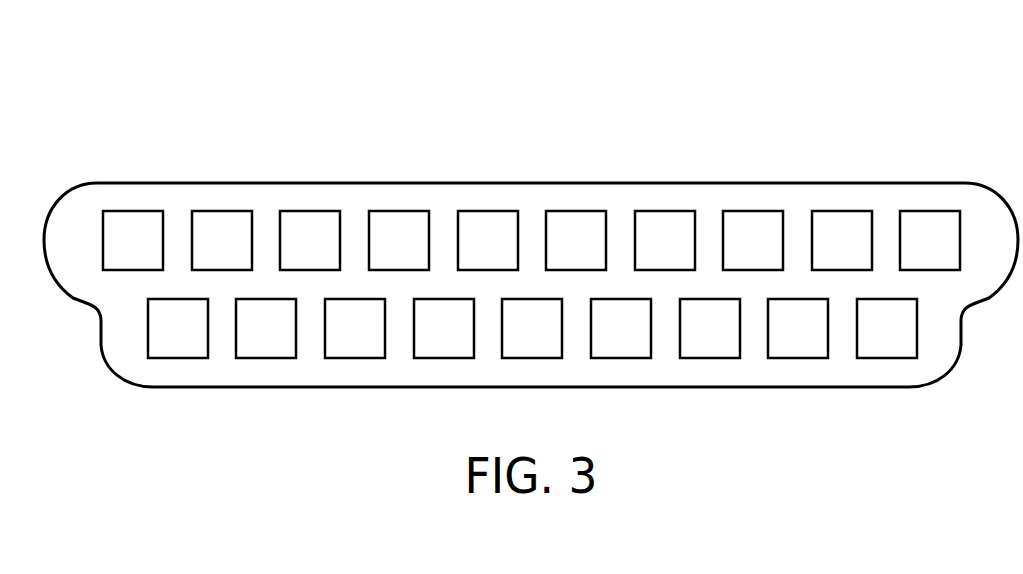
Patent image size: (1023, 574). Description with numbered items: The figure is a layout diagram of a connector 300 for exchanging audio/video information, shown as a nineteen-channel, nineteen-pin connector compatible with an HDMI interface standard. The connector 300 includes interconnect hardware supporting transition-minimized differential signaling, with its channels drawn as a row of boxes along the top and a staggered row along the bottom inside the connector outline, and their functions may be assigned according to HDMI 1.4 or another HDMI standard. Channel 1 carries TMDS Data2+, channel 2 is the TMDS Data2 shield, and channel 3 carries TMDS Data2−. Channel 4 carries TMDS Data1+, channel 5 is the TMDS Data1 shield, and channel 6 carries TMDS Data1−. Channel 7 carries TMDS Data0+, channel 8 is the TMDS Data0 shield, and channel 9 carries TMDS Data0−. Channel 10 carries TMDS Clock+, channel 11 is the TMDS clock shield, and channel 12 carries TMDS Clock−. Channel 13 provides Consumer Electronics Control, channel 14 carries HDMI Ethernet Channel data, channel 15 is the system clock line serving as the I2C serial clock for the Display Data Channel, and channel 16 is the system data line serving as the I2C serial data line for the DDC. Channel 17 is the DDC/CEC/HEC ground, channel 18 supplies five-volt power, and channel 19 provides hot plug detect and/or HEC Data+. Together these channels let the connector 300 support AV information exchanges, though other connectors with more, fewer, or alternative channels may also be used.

The connector 300 is at (145, 103).
The channel 1 is at (133, 240).
The channel 2 is at (178, 328).
The channel 3 is at (222, 240).
The channel 4 is at (266, 328).
The channel 5 is at (310, 240).
The channel 6 is at (355, 328).
The channel 7 is at (399, 240).
The channel 8 is at (444, 328).
The channel 9 is at (488, 240).
The channel 10 is at (532, 328).
The channel 11 is at (576, 240).
The channel 12 is at (621, 328).
The channel 13 is at (665, 240).
The channel 14 is at (710, 328).
The channel 15 is at (753, 240).
The channel 16 is at (798, 328).
The channel 17 is at (842, 240).
The channel 18 is at (887, 328).
The channel 19 is at (930, 240).